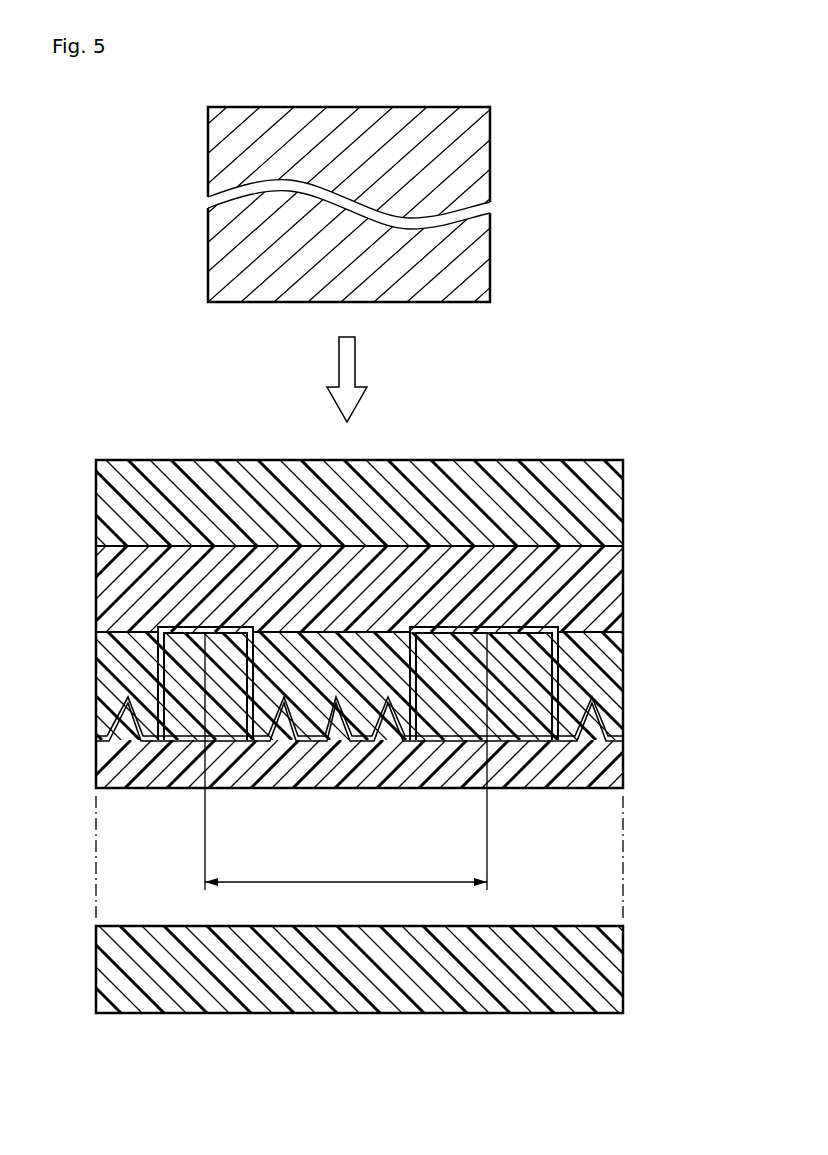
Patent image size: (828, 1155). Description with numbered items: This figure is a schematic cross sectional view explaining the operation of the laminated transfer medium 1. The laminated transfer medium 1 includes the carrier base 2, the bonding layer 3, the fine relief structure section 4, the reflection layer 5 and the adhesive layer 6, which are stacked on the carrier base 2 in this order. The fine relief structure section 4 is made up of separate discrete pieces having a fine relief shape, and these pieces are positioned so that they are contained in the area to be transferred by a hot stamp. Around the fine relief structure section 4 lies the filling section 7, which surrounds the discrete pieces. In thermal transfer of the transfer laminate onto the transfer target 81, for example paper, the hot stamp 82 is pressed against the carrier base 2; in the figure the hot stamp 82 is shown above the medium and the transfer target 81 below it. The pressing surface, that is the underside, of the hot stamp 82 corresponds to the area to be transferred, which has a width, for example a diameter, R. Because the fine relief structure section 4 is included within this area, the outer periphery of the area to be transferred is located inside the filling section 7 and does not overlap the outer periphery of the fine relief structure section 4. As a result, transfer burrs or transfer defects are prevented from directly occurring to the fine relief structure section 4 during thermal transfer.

The laminated transfer medium 1 is at (535, 416).
The carrier base 2 is at (590, 505).
The bonding layer 3 is at (603, 585).
The fine relief structure section 4 is at (585, 652).
The reflection layer 5 is at (593, 705).
The adhesive layer 6 is at (593, 777).
The filling section 7 is at (560, 662).
The width of area to be transferred R is at (346, 761).
The transfer target 81 is at (587, 977).
The hot stamp 82 is at (452, 176).